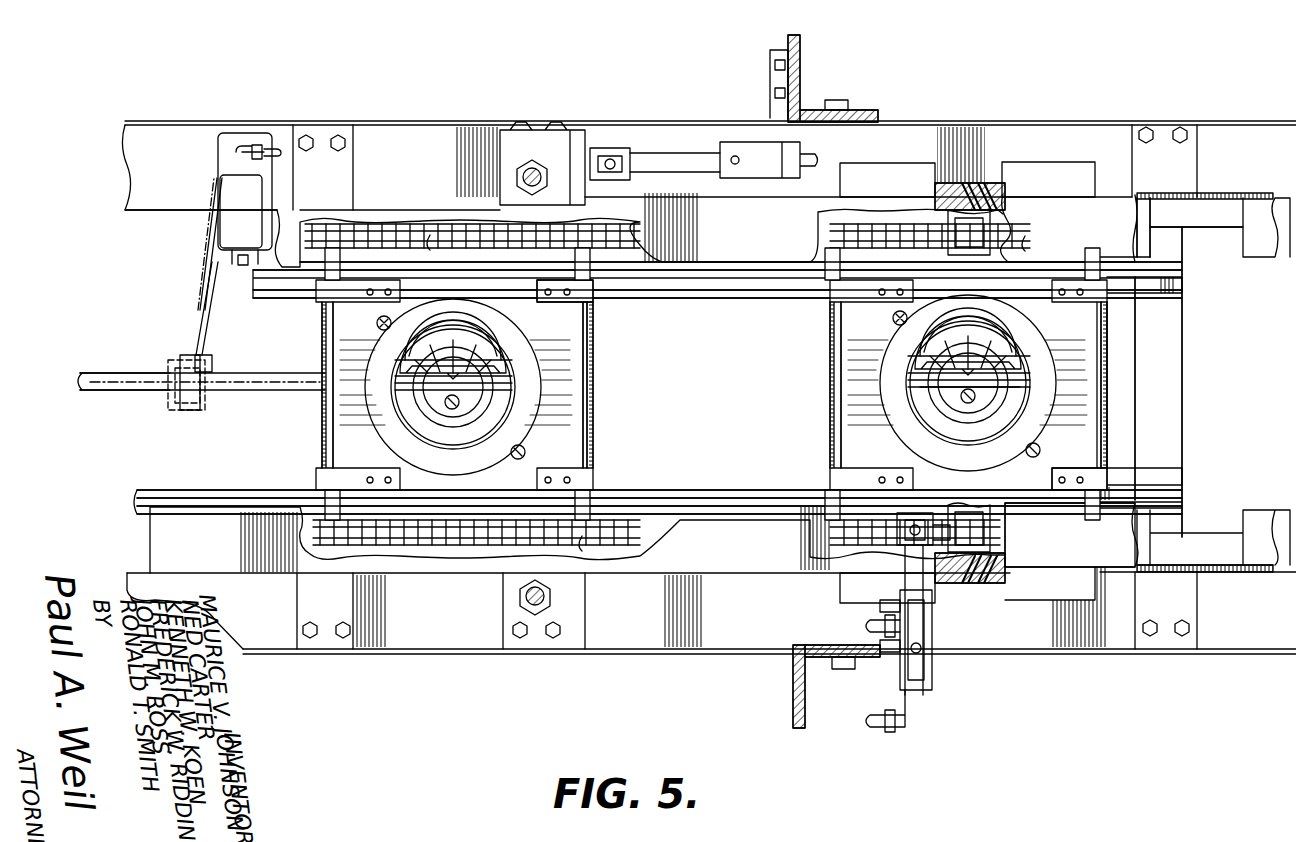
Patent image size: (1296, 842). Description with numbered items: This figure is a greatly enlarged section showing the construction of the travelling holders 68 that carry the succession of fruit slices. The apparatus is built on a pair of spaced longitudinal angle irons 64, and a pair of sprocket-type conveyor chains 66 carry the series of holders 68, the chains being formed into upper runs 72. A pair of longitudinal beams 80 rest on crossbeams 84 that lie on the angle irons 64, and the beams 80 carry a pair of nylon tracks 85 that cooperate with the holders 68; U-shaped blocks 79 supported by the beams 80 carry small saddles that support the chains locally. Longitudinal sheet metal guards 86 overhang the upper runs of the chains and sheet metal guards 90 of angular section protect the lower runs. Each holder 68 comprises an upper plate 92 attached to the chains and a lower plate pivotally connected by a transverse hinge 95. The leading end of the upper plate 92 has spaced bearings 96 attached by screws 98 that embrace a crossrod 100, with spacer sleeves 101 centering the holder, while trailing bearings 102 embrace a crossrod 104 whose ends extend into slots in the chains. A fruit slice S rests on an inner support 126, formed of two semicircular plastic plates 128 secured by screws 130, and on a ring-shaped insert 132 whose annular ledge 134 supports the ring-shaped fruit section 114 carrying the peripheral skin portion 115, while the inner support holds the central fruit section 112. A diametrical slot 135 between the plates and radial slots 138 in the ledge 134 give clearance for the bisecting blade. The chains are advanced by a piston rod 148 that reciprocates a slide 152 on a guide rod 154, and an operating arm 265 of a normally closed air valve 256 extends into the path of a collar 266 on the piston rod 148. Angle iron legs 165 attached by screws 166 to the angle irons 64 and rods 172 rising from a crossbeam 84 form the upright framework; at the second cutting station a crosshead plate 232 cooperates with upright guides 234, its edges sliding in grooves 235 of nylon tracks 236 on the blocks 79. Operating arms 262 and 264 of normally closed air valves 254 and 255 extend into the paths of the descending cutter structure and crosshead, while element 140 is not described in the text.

The longitudinal angle irons 64 is at (702, 190).
The conveyor chains 66 is at (430, 236).
The holders 68 is at (605, 338).
The upper runs 72 is at (380, 236).
The U-shaped blocks 79 is at (1068, 170).
The longitudinal beams 80 is at (640, 266).
The crossbeams 84 is at (542, 128).
The nylon tracks 85 is at (692, 292).
The longitudinal sheet metal guards 86 is at (812, 207).
The sheet metal guards 90 is at (1040, 121).
The upper plate 92 is at (592, 400).
The transverse hinge 95 is at (592, 435).
The bearings 96 is at (557, 298).
The screws 98 is at (545, 479).
The crossrod 100 is at (1108, 332).
The spacer sleeves 101 is at (830, 260).
The bearings 102 is at (320, 298).
The crossrod 104 is at (322, 450).
The central fruit section 112 is at (458, 360).
The ring-shaped fruit section 114 is at (957, 340).
The peripheral portion of the skin 115 is at (930, 338).
The inner support 126 is at (372, 422).
The semicircular plastic plates 128 is at (1000, 405).
The screws 130 is at (453, 410).
The ring-shaped insert 132 is at (520, 378).
The annular ledge 134 is at (405, 397).
The diametrical slot 135 is at (950, 396).
The radial slots 138 is at (1000, 382).
The table plate 140 is at (1280, 431).
The piston rod 148 is at (150, 400).
The slide 152 is at (182, 412).
The guide rod 154 is at (100, 372).
The angle iron legs 165 is at (802, 65).
The screws 166 is at (840, 100).
The rods 172 is at (522, 168).
The plate 232 is at (950, 222).
The upright guides 234 is at (940, 195).
The grooves 235 is at (970, 185).
The nylon tracks 236 is at (988, 185).
The normally closed air valve 254 is at (742, 150).
The normally closed air valve 255 is at (935, 660).
The normally closed air valve 256 is at (235, 188).
The operating arm 262 is at (658, 162).
The operating arm 264 is at (905, 553).
The operating arm 265 is at (182, 278).
The collar 266 is at (200, 362).
The fruit slice S is at (365, 330).